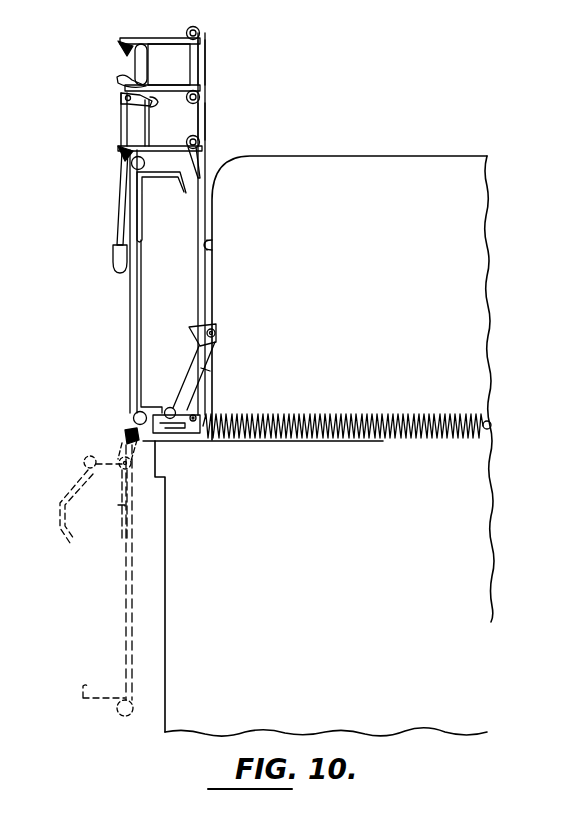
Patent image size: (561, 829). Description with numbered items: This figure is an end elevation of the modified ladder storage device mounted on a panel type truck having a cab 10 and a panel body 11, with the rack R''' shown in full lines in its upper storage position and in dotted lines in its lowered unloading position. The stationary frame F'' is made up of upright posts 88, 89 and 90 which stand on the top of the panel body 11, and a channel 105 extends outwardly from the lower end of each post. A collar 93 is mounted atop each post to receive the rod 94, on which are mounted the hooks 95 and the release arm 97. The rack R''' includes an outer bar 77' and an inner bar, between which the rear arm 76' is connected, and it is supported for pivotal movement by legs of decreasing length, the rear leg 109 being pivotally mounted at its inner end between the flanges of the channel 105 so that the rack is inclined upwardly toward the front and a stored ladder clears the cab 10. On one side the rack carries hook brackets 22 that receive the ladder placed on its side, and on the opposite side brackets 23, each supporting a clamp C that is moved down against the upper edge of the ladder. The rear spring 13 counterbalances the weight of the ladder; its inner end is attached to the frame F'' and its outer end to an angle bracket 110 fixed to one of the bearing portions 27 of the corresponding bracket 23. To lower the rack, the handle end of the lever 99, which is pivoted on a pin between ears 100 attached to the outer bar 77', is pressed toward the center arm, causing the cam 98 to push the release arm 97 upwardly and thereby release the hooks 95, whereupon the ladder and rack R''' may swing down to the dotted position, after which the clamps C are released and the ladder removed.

The cab 10 is at (320, 163).
The panel body 11 is at (473, 493).
The rear spring 13 is at (343, 415).
The hook brackets 22 is at (168, 175).
The brackets 23 is at (149, 402).
The bearing portions 27 is at (165, 408).
The rear arm 76' is at (108, 281).
The outer bar 77' is at (113, 63).
The post 88 is at (205, 51).
The post 89 is at (205, 118).
The post 90 is at (196, 258).
The collar 93 is at (200, 31).
The rod 94 is at (193, 62).
The hooks 95 is at (166, 14).
The release arm 97 is at (118, 80).
The cam 98 is at (153, 104).
The lever 99 is at (122, 163).
The ears 100 is at (124, 103).
The channel 105 is at (148, 443).
The rear leg 109 is at (130, 438).
The angle bracket 110 is at (163, 436).
The clamp C is at (222, 341).
The frame F'' is at (235, 76).
The rack R''' is at (91, 433).